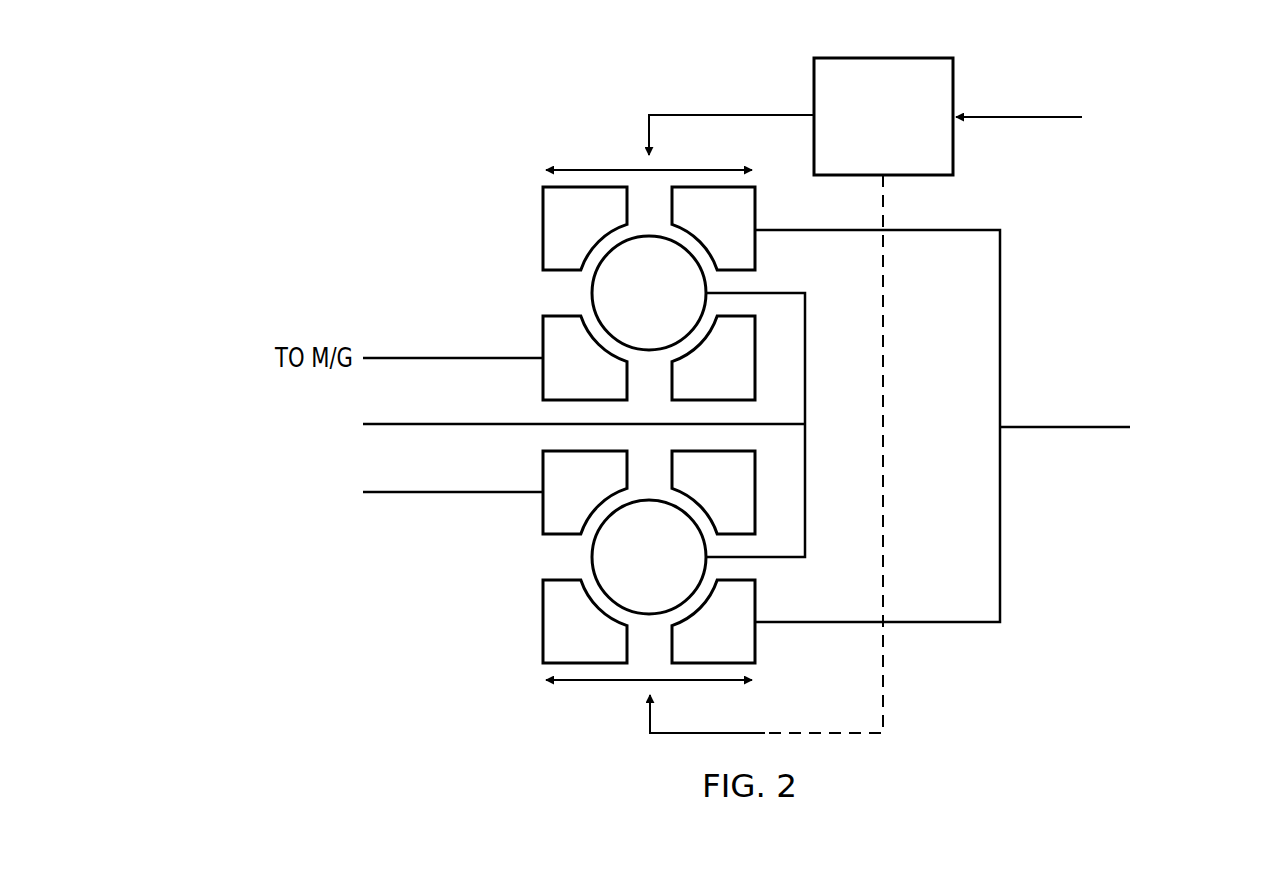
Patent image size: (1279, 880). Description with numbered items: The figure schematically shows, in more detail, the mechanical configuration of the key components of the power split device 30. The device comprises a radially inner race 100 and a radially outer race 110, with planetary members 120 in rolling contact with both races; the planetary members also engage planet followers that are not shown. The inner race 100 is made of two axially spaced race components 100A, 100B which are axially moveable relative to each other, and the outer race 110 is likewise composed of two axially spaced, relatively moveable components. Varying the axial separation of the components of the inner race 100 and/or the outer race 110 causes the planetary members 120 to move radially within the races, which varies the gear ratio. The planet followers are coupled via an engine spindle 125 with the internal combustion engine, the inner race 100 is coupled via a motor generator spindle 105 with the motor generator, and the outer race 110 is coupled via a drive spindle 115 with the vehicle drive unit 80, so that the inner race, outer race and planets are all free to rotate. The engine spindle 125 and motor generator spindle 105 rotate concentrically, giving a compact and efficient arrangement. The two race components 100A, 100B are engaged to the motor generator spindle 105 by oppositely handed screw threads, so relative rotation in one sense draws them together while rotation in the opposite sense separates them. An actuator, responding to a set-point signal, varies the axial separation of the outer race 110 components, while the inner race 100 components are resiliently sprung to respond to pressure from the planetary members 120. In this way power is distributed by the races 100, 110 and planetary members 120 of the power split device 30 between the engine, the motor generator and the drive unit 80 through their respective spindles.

The power split device 30 is at (447, 78).
The vehicle drive unit 80 is at (883, 57).
The radially inner race 100 is at (543, 345).
The race component 100A is at (602, 388).
The race component 100B is at (743, 388).
The motor generator spindle 105 is at (466, 492).
The radially outer race 110 is at (543, 229).
The drive spindle 115 is at (1065, 426).
The planetary members 120 is at (673, 307).
The engine spindle 125 is at (423, 424).